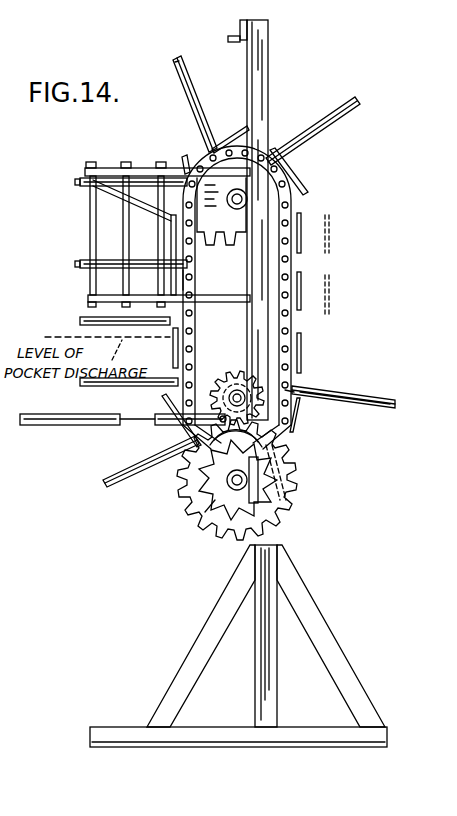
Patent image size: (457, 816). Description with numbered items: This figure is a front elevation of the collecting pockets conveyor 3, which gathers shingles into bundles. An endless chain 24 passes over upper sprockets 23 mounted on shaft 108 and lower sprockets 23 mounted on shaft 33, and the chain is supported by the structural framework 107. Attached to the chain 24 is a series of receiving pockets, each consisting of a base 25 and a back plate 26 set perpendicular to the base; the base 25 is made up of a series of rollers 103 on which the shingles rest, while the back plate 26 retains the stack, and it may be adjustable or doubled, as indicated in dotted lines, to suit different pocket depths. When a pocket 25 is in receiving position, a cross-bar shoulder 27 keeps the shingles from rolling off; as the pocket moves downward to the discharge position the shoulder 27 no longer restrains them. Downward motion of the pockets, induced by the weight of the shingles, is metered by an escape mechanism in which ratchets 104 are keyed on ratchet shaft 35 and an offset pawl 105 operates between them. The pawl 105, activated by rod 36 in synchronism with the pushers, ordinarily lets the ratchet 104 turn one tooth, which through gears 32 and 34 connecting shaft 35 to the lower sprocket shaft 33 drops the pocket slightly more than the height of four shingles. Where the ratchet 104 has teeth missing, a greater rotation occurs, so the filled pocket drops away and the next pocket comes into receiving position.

The collecting pockets conveyor 3 is at (284, 124).
The sprockets 23 is at (204, 349).
The continuous chain 24 is at (197, 281).
The base of collecting pocket 25 is at (80, 182).
The back plate 26 is at (236, 136).
The cross-bar shoulder 27 is at (96, 165).
The gear 32 is at (176, 388).
The lower sprocket shaft 33 is at (283, 393).
The gear 34 is at (298, 491).
The ratchet shaft 35 is at (200, 490).
The rod 36 is at (58, 426).
The rollers 103 is at (182, 70).
The ratchet 104 is at (205, 512).
The offset pawl 105 is at (265, 445).
The structural framework 107 is at (203, 638).
The upper sprocket shaft 108 is at (235, 199).